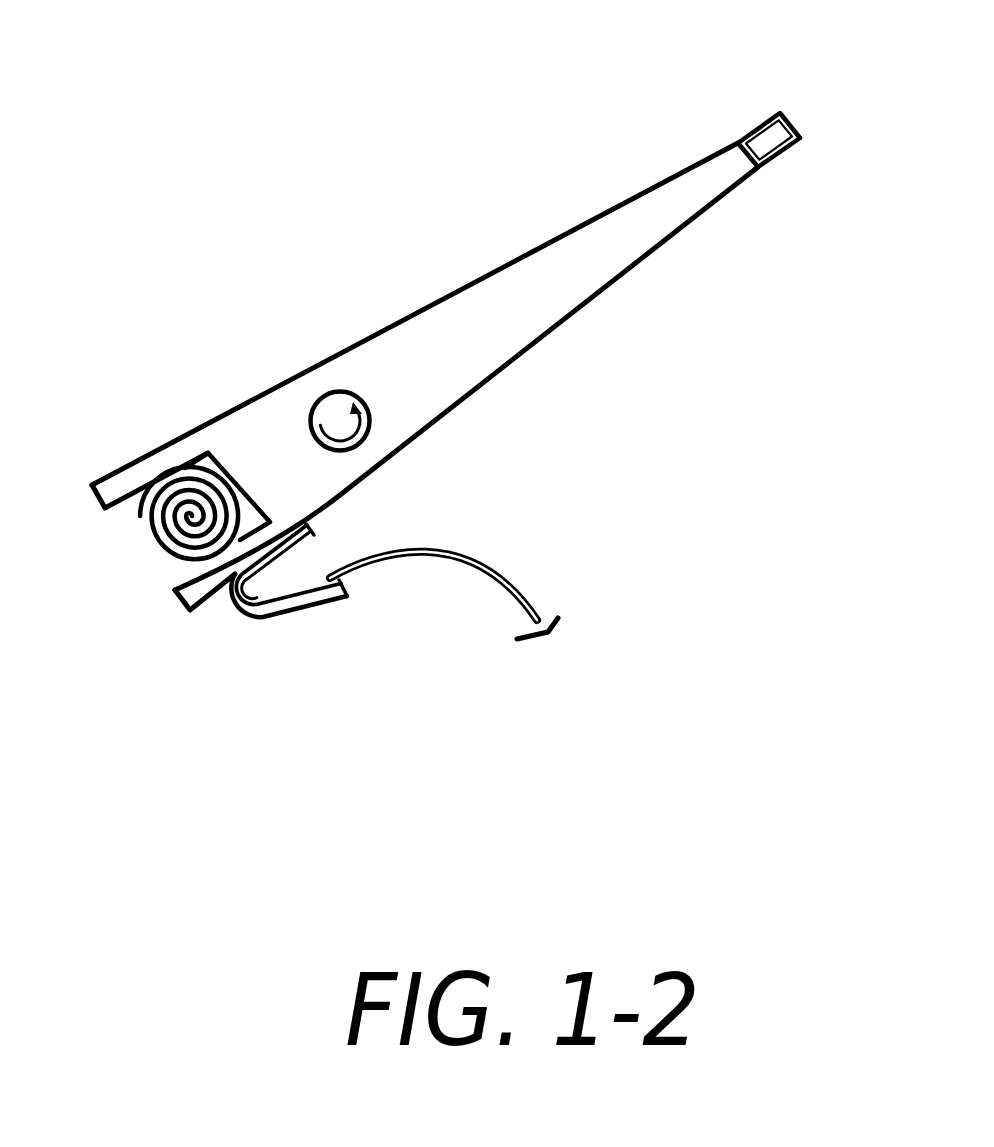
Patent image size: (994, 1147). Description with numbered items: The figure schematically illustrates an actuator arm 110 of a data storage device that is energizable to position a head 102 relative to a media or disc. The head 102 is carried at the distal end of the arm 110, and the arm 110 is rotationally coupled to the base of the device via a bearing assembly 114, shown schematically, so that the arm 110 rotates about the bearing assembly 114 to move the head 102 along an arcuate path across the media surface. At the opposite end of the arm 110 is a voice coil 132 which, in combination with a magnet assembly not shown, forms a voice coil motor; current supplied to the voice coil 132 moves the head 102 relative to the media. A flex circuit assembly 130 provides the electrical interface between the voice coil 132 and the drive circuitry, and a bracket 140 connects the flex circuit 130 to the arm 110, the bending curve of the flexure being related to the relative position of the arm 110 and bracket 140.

The head 102 is at (804, 87).
The actuator arm 110 is at (585, 309).
The bearing assembly 114 is at (400, 451).
The flex circuit assembly 130 is at (495, 566).
The voice coil 132 is at (124, 568).
The bracket 140 is at (306, 616).